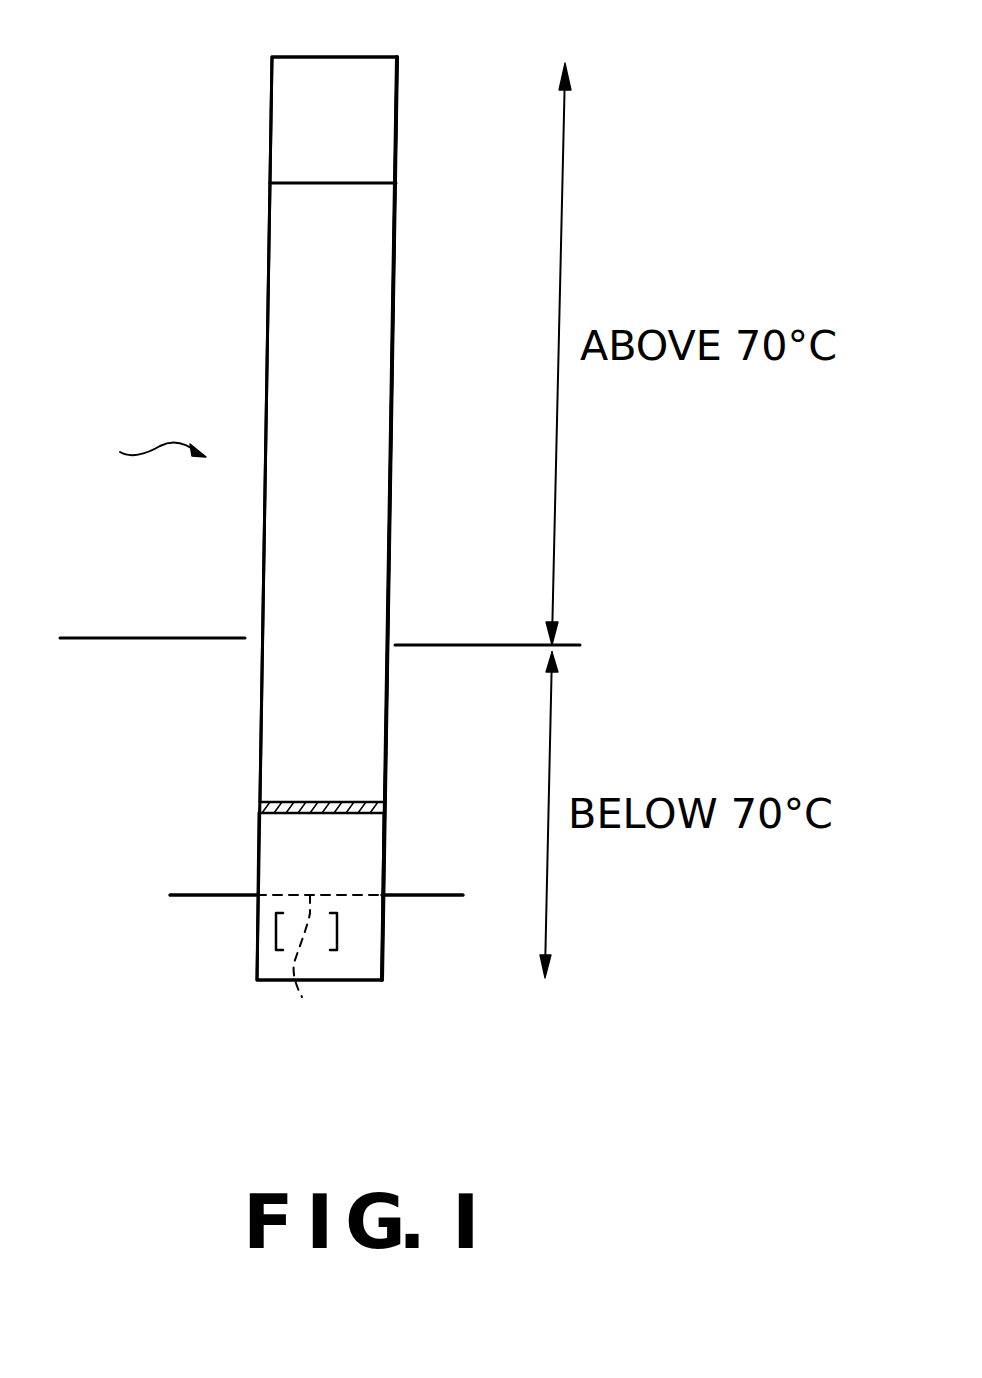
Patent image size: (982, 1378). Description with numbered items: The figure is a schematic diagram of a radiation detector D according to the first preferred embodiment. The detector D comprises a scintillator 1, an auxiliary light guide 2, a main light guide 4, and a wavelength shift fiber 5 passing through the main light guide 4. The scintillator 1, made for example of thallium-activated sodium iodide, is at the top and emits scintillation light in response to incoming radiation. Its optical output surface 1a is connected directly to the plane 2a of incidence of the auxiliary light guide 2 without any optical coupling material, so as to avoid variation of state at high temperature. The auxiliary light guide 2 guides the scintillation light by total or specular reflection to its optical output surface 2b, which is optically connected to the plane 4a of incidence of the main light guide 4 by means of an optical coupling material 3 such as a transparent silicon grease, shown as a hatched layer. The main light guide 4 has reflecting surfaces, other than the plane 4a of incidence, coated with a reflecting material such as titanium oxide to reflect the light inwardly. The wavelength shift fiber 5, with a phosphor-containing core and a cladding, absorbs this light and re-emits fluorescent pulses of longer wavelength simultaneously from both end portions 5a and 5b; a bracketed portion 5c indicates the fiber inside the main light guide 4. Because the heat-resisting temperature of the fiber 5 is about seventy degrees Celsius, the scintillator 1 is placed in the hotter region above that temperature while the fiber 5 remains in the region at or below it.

The scintillator 1 is at (386, 118).
The optical output surface 1a is at (365, 184).
The auxiliary light guide 2 is at (362, 467).
The plane of incidence 2a is at (320, 152).
The optical output surface 2b is at (347, 813).
The optical coupling material 3 is at (380, 807).
The main light guide 4 is at (268, 853).
The plane of incidence 4a is at (276, 802).
The wavelength shift fiber 5 is at (458, 894).
The end portion 5a is at (170, 897).
The end portion 5b is at (463, 900).
The hidden portion of cover 5c is at (295, 963).
The radiation detector D is at (144, 449).